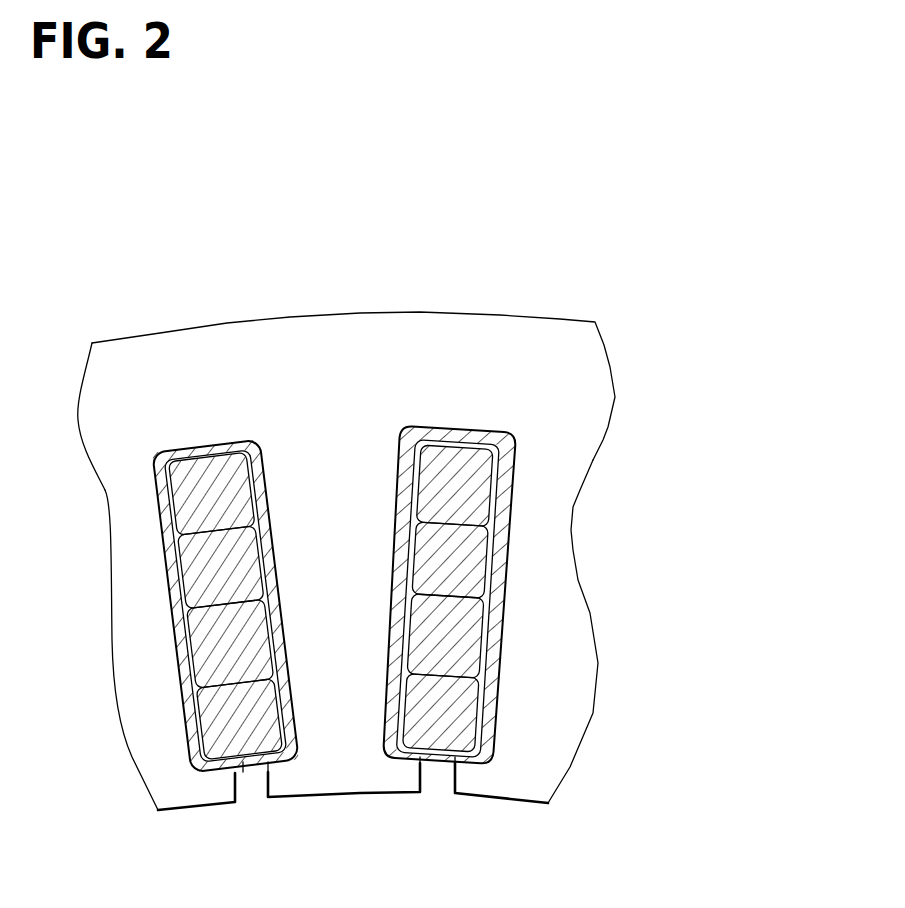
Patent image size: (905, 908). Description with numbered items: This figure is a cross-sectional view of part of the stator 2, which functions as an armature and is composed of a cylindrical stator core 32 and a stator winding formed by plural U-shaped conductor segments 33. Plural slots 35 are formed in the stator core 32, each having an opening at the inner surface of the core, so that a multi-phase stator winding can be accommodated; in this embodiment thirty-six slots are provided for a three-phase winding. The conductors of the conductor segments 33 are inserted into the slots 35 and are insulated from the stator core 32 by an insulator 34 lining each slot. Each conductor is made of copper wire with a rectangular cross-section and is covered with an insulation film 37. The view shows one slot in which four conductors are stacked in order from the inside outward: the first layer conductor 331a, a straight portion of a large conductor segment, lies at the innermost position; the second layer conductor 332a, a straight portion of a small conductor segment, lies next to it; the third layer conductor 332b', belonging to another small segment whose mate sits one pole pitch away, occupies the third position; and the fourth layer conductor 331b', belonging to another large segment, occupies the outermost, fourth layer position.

The stator 2 is at (572, 260).
The stator core 32 is at (367, 343).
The U-shaped conductor segments 33 is at (725, 465).
The insulator 34 is at (502, 432).
The slots 35 is at (432, 768).
The insulation film 37 is at (162, 499).
The first layer conductor 331a is at (457, 727).
The second layer conductor 332a is at (460, 647).
The third layer conductor 332b' is at (561, 564).
The fourth layer conductor 331b' is at (563, 492).